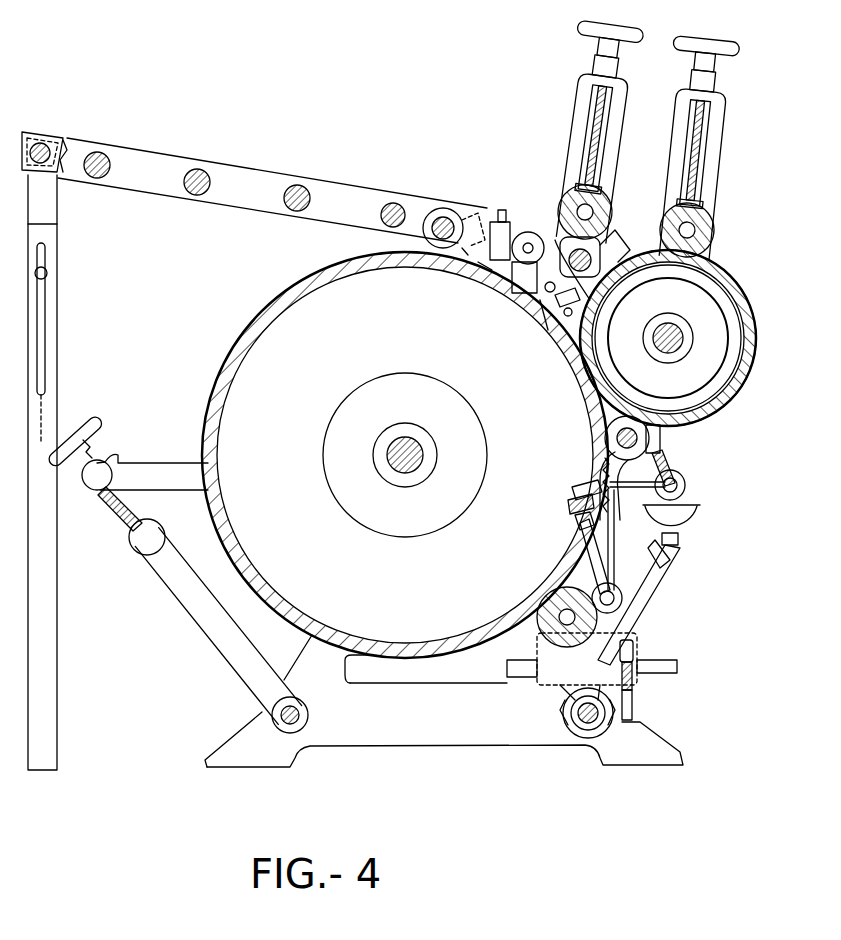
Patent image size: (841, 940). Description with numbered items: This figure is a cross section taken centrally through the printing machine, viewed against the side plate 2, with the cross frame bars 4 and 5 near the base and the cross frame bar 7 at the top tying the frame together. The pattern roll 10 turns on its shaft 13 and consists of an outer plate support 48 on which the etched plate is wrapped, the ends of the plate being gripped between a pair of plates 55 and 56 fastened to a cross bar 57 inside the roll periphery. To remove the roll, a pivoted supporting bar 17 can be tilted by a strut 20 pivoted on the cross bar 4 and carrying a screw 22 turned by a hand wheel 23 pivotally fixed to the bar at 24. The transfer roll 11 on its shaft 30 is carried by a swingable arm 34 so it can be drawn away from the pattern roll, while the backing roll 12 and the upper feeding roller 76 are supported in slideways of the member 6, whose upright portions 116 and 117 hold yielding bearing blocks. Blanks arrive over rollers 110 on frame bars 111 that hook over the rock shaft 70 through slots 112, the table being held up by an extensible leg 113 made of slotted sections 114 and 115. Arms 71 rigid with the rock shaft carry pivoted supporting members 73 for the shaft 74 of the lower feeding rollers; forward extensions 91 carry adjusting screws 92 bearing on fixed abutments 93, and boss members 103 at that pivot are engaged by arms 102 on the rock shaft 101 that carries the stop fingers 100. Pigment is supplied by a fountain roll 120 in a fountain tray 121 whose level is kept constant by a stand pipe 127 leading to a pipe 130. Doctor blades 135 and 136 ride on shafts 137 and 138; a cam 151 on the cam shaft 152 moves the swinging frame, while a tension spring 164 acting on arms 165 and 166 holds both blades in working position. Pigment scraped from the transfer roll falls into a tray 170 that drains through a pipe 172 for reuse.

The side plate 2 is at (444, 711).
The cross frame bar 4 is at (308, 716).
The cross frame bar 5 is at (585, 722).
The member 6 is at (618, 238).
The cross frame bar 7 is at (548, 330).
The pattern roll 10 is at (225, 360).
The transfer roll 11 is at (757, 388).
The backing roll 12 is at (712, 229).
The shaft 13 is at (395, 470).
The pivoted supporting bar 17 is at (177, 450).
The strut 20 is at (190, 580).
The screw 22 is at (135, 510).
The hand wheel 23 is at (98, 420).
The pivotal fixing 24 is at (95, 490).
The shaft 30 is at (684, 338).
The swingable arm 34 is at (655, 455).
The outer plate support 48 is at (308, 288).
The plate 55 is at (578, 525).
The plate 56 is at (570, 512).
The cross bar 57 is at (575, 490).
The rock shaft 70 is at (440, 210).
The arm 71 is at (445, 258).
The supporting member 73 is at (515, 290).
The shaft 74 is at (615, 290).
The coacting roller 76 is at (570, 205).
The forward extension 91 is at (508, 222).
The adjusting screw 92 is at (500, 210).
The fixed abutment 93 is at (478, 265).
The stop finger 100 is at (612, 240).
The rock shaft 101 is at (560, 300).
The arm 102 is at (545, 290).
The boss member 103 is at (535, 232).
The roller 110 is at (390, 210).
The frame bar 111 is at (160, 158).
The slot 112 is at (470, 215).
The extensible leg 113 is at (52, 327).
The section 114 is at (48, 210).
The section 115 is at (52, 552).
The upright portion 116 is at (580, 105).
The upright portion 117 is at (722, 128).
The fountain roll 120 is at (690, 150).
The fountain tray 121 is at (550, 685).
The stand pipe 127 is at (634, 649).
The pipe 130 is at (633, 705).
The doctor blade 135 is at (590, 560).
The doctor blade 136 is at (662, 437).
The shaft 137 is at (624, 603).
The shaft 138 is at (686, 487).
The cam 151 is at (605, 430).
The cam shaft 152 is at (672, 458).
The tension spring 164 is at (600, 462).
The arm 165 is at (610, 510).
The arm 166 is at (614, 535).
The tray 170 is at (690, 520).
The pipe 172 is at (670, 572).